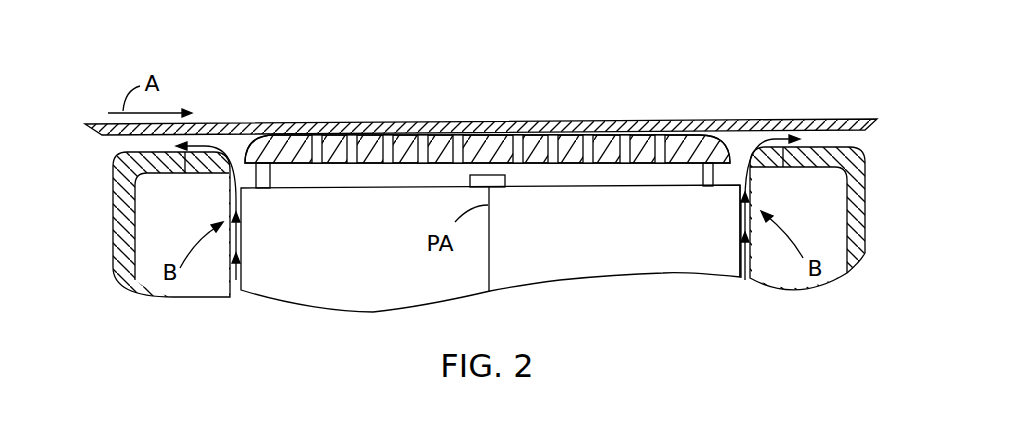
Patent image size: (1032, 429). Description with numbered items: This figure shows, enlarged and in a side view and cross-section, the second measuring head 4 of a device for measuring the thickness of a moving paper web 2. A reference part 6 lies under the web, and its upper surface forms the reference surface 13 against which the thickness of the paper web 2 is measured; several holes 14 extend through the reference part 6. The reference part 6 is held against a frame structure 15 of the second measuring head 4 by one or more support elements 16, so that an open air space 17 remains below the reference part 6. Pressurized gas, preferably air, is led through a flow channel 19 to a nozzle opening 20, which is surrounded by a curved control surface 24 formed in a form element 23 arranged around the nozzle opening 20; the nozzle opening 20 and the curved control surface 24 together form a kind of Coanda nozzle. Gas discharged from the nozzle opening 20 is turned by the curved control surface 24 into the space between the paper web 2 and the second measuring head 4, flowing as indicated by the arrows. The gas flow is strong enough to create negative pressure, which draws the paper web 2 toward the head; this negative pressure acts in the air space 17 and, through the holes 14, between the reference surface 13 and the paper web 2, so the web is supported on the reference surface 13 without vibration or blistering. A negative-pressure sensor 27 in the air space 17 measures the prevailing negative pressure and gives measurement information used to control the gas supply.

The paper web 2 is at (866, 119).
The second measuring head 4 is at (105, 288).
The reference part 6 is at (612, 150).
The reference surface 13 is at (442, 131).
The holes 14 is at (314, 133).
The frame structure 15 is at (853, 222).
The support elements 16 is at (707, 168).
The air space 17 is at (390, 170).
The flow channel 19 is at (740, 229).
The nozzle opening 20 is at (752, 140).
The form element 23 is at (208, 172).
The curved control surface 24 is at (232, 151).
The negative-pressure sensor 27 is at (505, 178).